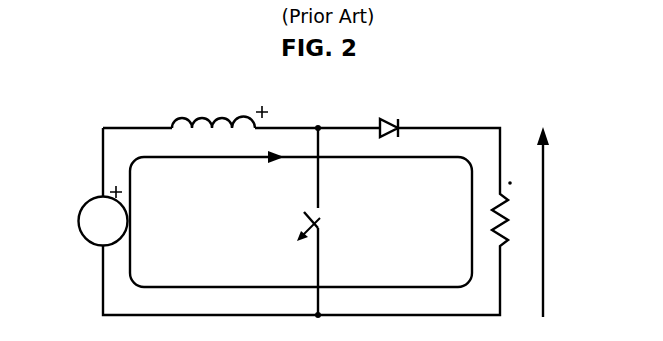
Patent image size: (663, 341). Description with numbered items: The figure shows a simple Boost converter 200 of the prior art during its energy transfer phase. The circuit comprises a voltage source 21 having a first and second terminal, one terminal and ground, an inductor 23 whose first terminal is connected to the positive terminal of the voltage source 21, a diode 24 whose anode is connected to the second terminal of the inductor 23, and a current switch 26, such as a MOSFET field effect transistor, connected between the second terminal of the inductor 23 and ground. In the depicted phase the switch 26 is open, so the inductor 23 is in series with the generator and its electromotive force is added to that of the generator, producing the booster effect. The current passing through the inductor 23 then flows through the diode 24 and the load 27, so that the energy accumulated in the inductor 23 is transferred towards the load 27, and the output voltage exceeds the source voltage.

The simple Boost converter 200 is at (92, 91).
The voltage source 21 is at (79, 222).
The inductor 23 is at (215, 119).
The diode 24 is at (380, 125).
The current switch 26 is at (304, 212).
The load 27 is at (505, 242).